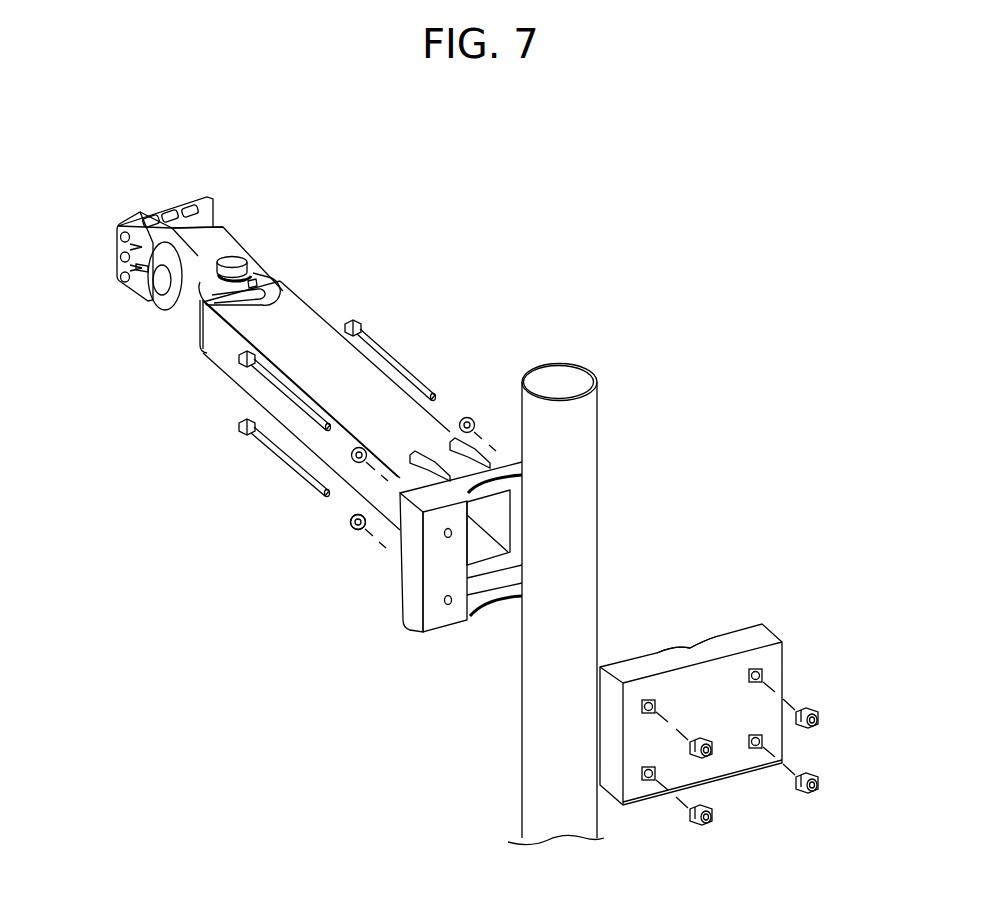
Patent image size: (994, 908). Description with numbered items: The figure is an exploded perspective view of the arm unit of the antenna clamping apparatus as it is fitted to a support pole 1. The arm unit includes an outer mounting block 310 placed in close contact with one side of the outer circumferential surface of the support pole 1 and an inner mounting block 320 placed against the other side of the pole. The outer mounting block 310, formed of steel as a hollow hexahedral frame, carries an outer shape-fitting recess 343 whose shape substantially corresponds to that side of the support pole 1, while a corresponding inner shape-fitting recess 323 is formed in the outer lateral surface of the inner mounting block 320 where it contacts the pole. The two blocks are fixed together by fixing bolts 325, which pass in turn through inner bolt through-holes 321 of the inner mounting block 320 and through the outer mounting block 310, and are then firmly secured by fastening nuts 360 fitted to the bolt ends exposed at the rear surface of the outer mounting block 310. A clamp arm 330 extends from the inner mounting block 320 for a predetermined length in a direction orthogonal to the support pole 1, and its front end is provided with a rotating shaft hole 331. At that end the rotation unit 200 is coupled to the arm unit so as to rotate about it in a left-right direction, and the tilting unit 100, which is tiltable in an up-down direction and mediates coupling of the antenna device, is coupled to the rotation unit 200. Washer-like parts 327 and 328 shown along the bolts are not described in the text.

The support pole 1 is at (583, 482).
The tilting unit 100 is at (118, 297).
The rotation unit 200 is at (250, 237).
The outer mounting block 310 is at (772, 657).
The inner mounting block 320 is at (413, 615).
The inner bolt through-hole 321 is at (448, 604).
The inner shape-fitting recess 323 is at (514, 465).
The fixing bolt 325 is at (272, 445).
The washer 327 is at (352, 520).
The nut 328 is at (357, 530).
The clamp arm 330 is at (230, 367).
The rotating shaft hole 331 is at (753, 750).
The outer shape-fitting recess 343 is at (687, 652).
The fastening nut 360 is at (812, 715).